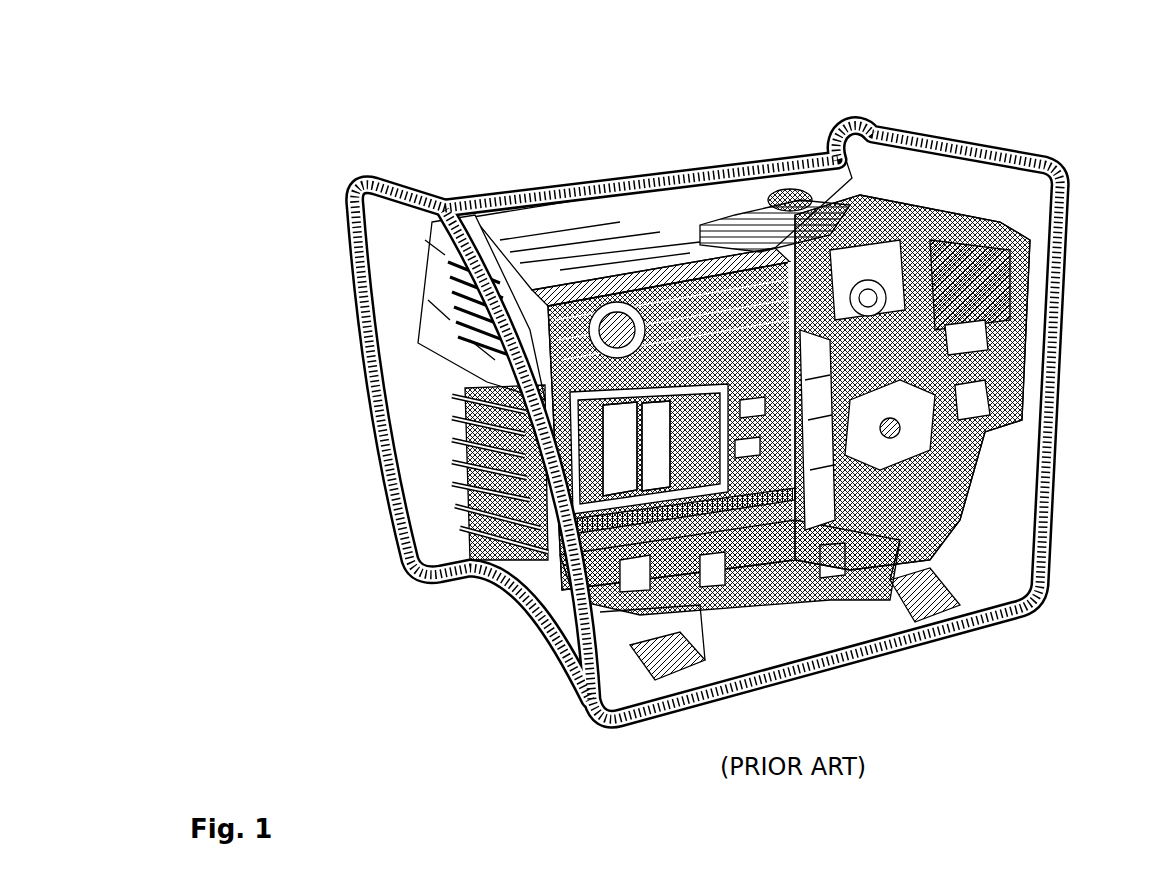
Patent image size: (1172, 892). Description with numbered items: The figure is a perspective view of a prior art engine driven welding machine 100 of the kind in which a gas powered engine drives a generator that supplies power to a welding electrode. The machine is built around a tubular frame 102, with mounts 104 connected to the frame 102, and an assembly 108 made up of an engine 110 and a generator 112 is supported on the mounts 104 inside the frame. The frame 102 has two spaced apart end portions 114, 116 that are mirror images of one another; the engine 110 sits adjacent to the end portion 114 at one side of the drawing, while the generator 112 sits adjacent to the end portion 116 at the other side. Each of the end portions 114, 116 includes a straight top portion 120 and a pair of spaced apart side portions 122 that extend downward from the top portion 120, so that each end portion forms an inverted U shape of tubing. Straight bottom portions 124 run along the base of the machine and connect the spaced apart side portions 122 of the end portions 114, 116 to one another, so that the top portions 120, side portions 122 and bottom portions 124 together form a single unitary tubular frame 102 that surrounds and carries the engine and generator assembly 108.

The engine driven welding machine 100 is at (780, 108).
The tubular frame 102 is at (985, 146).
The mounts 104 is at (665, 662).
The assembly 108 is at (590, 216).
The engine 110 is at (985, 432).
The generator 112 is at (455, 460).
The end portion 114 is at (1072, 250).
The end portion 116 is at (362, 328).
The top portion 120 is at (432, 196).
The side portions 122 is at (1042, 348).
The bottom portions 124 is at (463, 580).